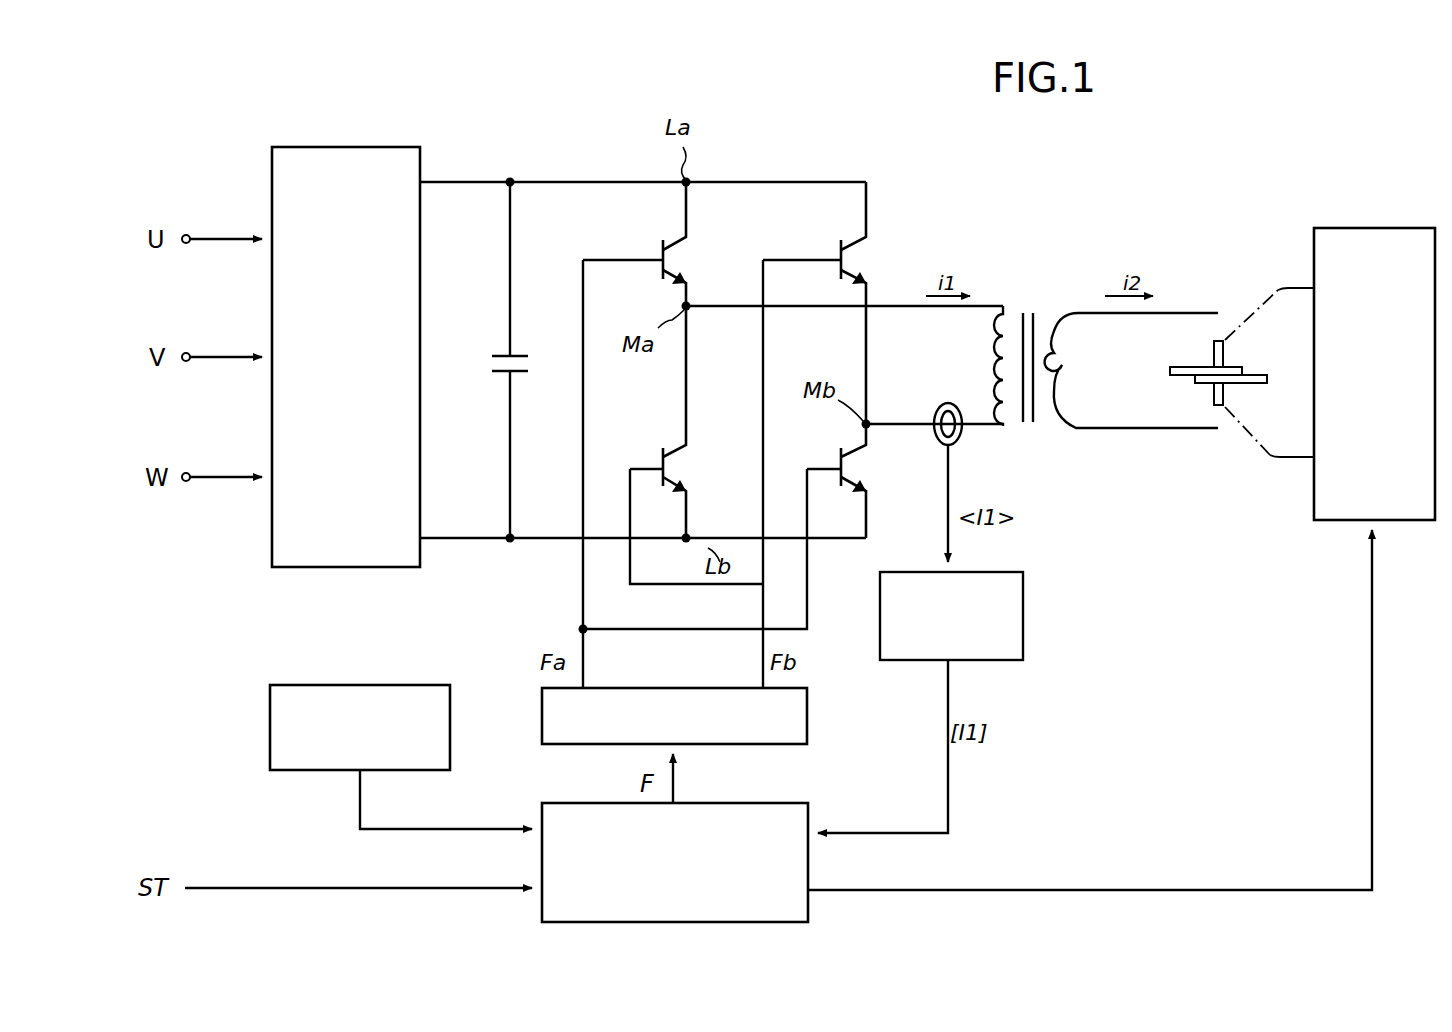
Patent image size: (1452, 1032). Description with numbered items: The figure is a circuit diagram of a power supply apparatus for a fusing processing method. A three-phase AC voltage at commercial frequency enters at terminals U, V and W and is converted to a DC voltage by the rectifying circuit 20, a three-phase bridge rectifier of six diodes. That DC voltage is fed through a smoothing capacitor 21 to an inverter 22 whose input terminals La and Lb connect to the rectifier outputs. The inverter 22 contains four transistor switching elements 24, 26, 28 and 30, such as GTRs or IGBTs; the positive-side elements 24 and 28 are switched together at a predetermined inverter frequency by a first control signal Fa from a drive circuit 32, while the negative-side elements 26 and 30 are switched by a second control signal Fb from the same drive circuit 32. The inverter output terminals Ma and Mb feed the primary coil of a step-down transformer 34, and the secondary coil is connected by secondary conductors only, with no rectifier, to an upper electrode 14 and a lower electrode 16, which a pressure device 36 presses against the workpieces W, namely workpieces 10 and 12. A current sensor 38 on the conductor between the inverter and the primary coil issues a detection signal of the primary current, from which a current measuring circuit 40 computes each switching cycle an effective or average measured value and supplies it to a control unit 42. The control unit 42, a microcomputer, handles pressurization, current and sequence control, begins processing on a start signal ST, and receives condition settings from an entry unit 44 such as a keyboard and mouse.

The workpiece 10 is at (1180, 364).
The workpiece 12 is at (1231, 379).
The upper electrode 14 is at (1224, 354).
The lower electrode 16 is at (1224, 390).
The rectifying circuit 20 is at (272, 183).
The smoothing capacitor 21 is at (536, 356).
The inverter 22 is at (804, 212).
The transistor switching element 24 is at (688, 258).
The transistor switching element 26 is at (868, 266).
The transistor switching element 28 is at (866, 476).
The transistor switching element 30 is at (686, 478).
The drive circuit 32 is at (808, 716).
The step-down transformer 34 is at (1024, 302).
The pressure device 36 is at (1354, 228).
The current sensor 38 is at (964, 442).
The current measuring circuit 40 is at (1024, 603).
The control unit 42 is at (782, 802).
The entry unit 44 is at (270, 710).